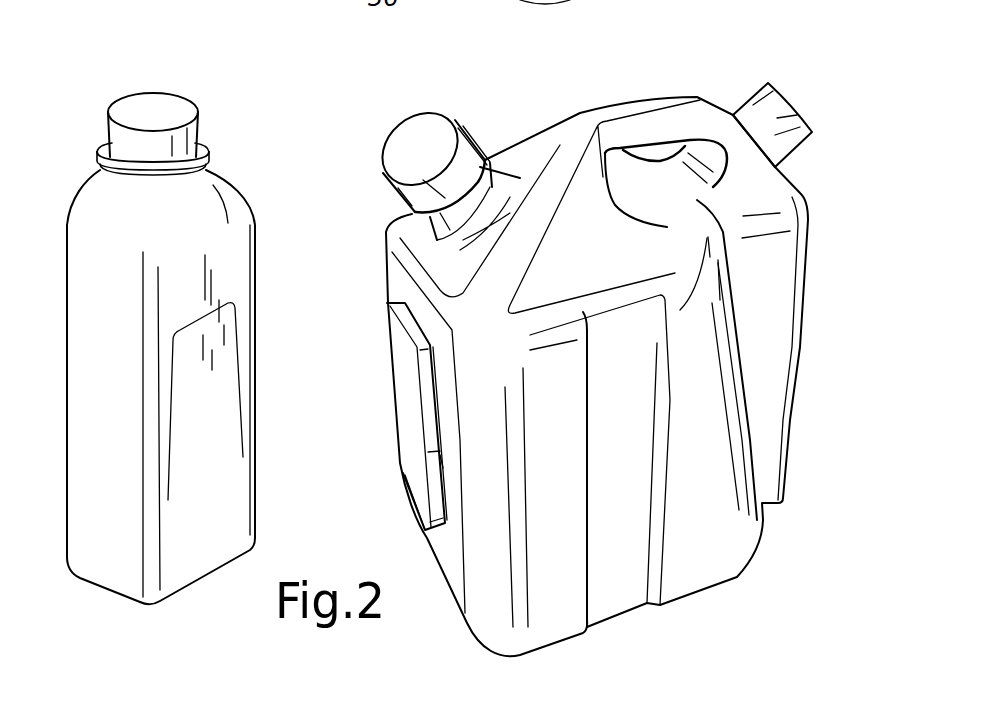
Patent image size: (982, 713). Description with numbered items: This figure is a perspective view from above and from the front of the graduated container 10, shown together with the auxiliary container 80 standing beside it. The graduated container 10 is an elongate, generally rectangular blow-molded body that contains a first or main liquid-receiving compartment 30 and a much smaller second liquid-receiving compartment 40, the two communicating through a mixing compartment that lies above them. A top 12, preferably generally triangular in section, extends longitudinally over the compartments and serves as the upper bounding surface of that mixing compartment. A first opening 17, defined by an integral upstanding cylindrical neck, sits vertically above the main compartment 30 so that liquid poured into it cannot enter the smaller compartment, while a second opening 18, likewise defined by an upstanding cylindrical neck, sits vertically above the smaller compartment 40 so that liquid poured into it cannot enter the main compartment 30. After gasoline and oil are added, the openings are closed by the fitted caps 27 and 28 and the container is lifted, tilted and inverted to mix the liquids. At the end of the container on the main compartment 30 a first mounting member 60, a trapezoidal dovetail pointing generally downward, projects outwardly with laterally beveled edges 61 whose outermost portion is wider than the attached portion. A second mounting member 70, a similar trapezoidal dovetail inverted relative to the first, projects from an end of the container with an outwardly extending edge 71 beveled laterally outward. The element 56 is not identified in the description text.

The graduated container 10 is at (355, 240).
The top 12 is at (490, 113).
The first opening 17 is at (493, 187).
The second opening 18 is at (750, 134).
The cap 27 is at (420, 153).
The cap 28 is at (780, 114).
The main liquid-receiving compartment 30 is at (557, 549).
The second liquid-receiving compartment 40 is at (765, 418).
The handle top surface 56 is at (645, 128).
The first mounting member 60 is at (412, 465).
The edge 61 is at (438, 472).
The second mounting member 70 is at (407, 373).
The edge 71 is at (427, 387).
The auxiliary container 80 is at (240, 143).